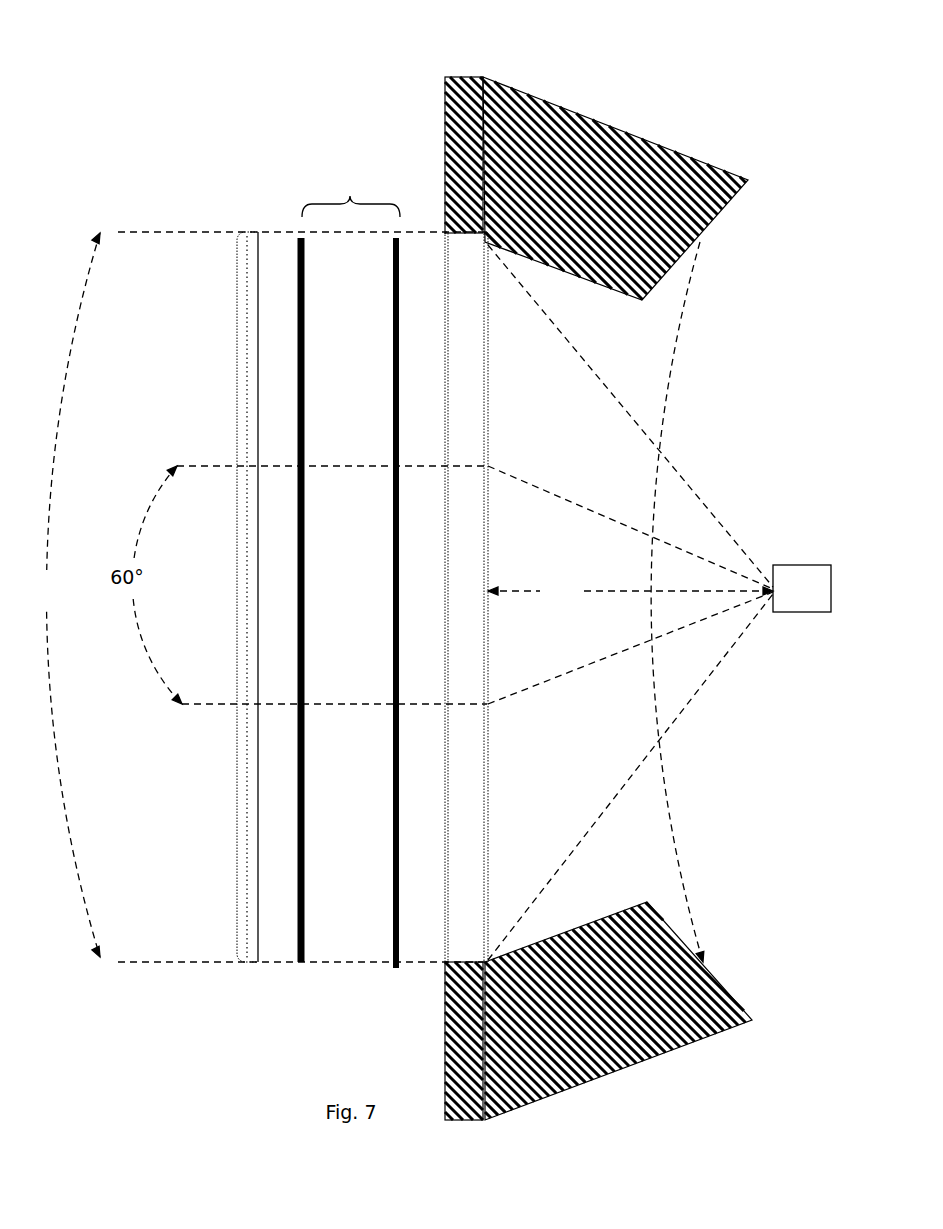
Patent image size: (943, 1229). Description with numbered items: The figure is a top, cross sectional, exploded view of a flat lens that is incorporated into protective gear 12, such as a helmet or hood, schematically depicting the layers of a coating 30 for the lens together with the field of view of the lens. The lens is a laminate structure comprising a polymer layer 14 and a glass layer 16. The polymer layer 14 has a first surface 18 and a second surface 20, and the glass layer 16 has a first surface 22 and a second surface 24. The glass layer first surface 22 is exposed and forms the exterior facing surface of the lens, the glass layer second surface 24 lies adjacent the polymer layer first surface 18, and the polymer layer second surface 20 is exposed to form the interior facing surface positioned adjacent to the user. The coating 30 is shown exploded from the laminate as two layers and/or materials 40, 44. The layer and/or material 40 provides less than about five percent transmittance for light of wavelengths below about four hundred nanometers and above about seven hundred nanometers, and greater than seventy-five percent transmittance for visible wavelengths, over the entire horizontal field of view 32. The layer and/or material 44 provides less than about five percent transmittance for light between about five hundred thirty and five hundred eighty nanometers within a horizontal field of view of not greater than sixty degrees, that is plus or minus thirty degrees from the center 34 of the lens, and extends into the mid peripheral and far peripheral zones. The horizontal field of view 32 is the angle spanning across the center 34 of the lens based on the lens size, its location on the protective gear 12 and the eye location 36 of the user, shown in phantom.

The protective gear 12 is at (484, 77).
The polymer layer 14 is at (466, 597).
The glass layer 16 is at (260, 395).
The polymer layer first surface 18 is at (446, 437).
The polymer layer second surface 20 is at (490, 440).
The glass layer first surface 22 is at (237, 450).
The glass layer second surface 24 is at (258, 447).
The coating 30 is at (351, 192).
The horizontal field of view 32 is at (67, 595).
The center of the lens 34 is at (630, 590).
The eye location 36 is at (790, 602).
The layer and/or material of the coating 40 is at (396, 968).
The layer and/or material of the coating 44 is at (302, 705).